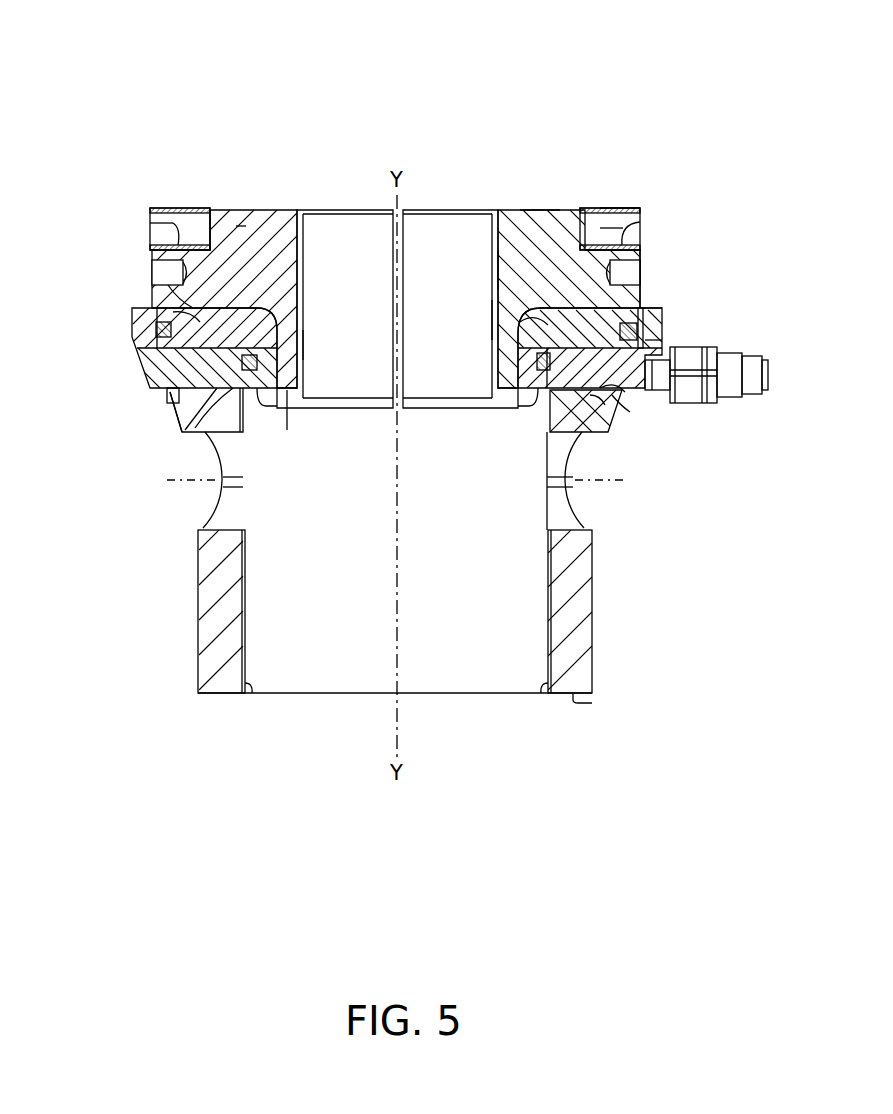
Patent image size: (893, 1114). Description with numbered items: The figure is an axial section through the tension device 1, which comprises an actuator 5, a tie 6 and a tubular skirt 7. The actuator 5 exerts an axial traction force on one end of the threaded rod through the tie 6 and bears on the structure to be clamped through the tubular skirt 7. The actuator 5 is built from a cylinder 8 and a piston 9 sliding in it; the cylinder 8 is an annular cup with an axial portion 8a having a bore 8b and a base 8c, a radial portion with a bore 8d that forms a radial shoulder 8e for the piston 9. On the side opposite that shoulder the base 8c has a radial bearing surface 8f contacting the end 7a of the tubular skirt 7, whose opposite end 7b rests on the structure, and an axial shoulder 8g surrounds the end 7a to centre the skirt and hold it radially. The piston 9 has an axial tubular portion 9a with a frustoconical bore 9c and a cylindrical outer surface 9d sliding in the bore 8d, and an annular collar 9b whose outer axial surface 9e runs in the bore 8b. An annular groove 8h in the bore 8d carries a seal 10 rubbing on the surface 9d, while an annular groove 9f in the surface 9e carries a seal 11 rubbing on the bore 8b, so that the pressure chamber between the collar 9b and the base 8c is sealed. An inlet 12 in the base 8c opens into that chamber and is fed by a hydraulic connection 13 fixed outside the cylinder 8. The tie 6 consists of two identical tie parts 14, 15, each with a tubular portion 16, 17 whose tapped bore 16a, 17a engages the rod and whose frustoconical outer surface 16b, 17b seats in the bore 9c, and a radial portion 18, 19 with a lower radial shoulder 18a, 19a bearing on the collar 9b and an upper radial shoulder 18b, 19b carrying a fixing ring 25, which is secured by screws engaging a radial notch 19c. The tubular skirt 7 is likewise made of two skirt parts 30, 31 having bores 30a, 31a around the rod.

The tension device 1 is at (500, 68).
The actuator 5 is at (668, 300).
The tie 6 is at (535, 203).
The tubular skirt 7 is at (603, 613).
The first end of tubular skirt 7a is at (613, 393).
The second end of tubular skirt 7b is at (578, 702).
The cylinder 8 is at (637, 393).
The axial portion of cylinder 8a is at (132, 312).
The bore of axial portion 8b is at (170, 313).
The base of cylinder 8c is at (243, 362).
The bore of base 8d is at (230, 395).
The radial shoulder 8e is at (156, 332).
The radial bearing surface 8f is at (187, 427).
The axial shoulder 8g is at (187, 413).
The annular groove of base 8h is at (167, 400).
The piston 9 is at (150, 305).
The axial tubular portion of piston 9a is at (580, 413).
The annular collar 9b is at (545, 322).
The bore of piston 9c is at (528, 372).
The outer surface of tubular portion 9d is at (602, 400).
The outer axial surface of collar 9e is at (664, 350).
The annular groove of collar 9f is at (655, 263).
The seal 10 is at (257, 300).
The seal 11 is at (665, 327).
The inlet 12 is at (630, 393).
The hydraulic connection 13 is at (768, 372).
The tie part 14 is at (143, 264).
The tie part 15 is at (645, 287).
The tubular portion of tie part 16 is at (288, 377).
The bore of tubular portion 16a is at (304, 344).
The frustoconical outer surface 16b is at (275, 400).
The tubular portion of tie part 17 is at (506, 353).
The bore of tubular portion 17a is at (513, 323).
The frustoconical outer surface 17b is at (513, 408).
The radial portion of tie part 18 is at (285, 220).
The lower radial shoulder 18a is at (213, 227).
The upper radial shoulder 18b is at (150, 222).
The radial portion of tie part 19 is at (507, 217).
The lower radial shoulder 19a is at (515, 300).
The upper radial shoulder 19b is at (643, 277).
The radial notch 19c is at (618, 207).
The fixing ring 25 is at (635, 208).
The skirt part 30 is at (212, 668).
The bore of skirt part 30a is at (246, 695).
The skirt part 31 is at (585, 670).
The bore of skirt part 31a is at (553, 695).